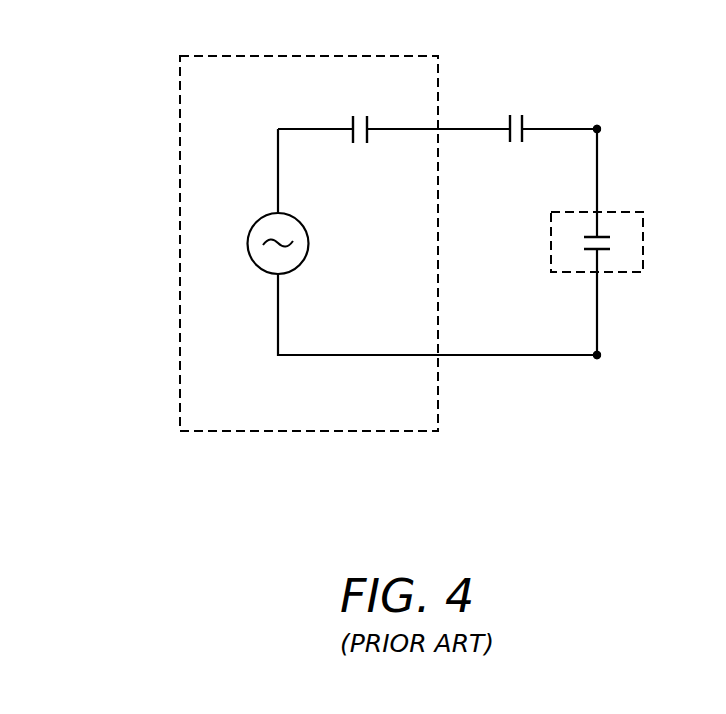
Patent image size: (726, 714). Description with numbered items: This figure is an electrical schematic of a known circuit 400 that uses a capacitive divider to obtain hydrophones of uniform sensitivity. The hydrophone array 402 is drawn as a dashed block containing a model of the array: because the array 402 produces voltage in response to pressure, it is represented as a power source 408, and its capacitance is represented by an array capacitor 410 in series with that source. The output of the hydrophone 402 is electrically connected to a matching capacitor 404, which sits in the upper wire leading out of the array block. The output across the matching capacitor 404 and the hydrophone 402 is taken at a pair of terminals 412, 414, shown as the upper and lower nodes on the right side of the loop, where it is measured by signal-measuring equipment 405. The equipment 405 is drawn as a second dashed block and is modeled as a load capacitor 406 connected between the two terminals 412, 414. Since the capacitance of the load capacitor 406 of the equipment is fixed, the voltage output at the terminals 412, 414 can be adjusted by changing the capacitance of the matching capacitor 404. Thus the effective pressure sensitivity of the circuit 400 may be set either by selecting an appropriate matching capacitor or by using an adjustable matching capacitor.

The circuit 400 is at (530, 38).
The hydrophone array 402 is at (342, 432).
The matching capacitor 404 is at (525, 120).
The signal-measuring equipment 405 is at (644, 226).
The load capacitor 406 is at (605, 250).
The power source 408 is at (305, 258).
The array capacitor 410 is at (350, 120).
The terminal 412 is at (598, 127).
The terminal 414 is at (598, 357).